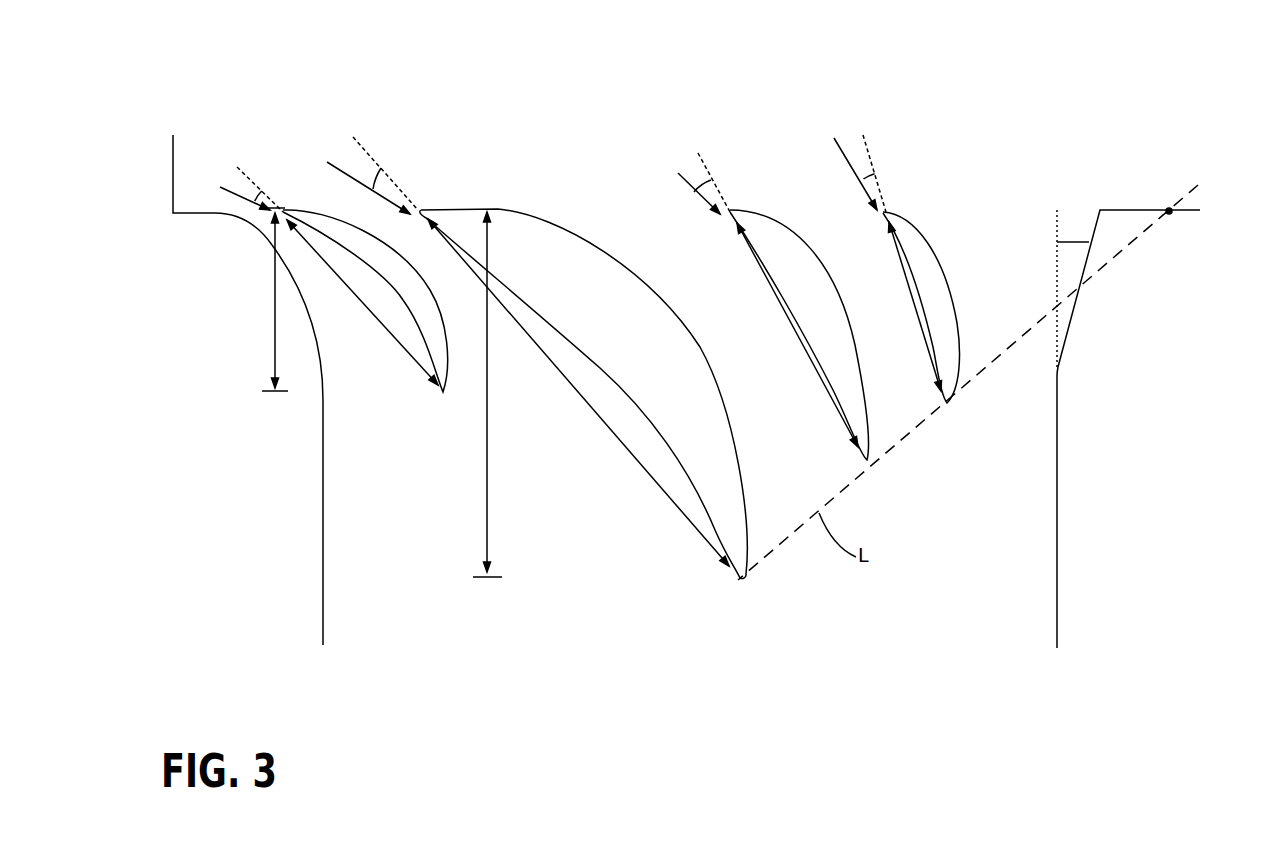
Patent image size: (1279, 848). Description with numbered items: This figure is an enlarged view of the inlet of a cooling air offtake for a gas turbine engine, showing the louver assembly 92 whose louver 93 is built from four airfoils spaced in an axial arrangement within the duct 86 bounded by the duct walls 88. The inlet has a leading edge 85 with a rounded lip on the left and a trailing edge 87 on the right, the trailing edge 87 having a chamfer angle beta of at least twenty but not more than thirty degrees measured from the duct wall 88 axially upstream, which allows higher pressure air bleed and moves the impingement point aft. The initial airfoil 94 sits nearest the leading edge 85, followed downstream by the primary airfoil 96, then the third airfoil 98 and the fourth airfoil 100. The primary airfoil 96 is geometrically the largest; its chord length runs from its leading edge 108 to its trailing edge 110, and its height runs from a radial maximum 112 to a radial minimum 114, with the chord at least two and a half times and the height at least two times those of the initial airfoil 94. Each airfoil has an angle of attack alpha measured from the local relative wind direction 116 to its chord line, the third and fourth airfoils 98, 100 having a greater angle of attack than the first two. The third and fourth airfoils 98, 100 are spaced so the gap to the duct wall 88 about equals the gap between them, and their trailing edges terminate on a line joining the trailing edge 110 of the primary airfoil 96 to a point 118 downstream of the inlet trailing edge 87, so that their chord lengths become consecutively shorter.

The leading edge 85 is at (207, 213).
The duct wall 88 is at (323, 536).
The initial airfoil 94 is at (349, 300).
The primary airfoil 96 is at (583, 394).
The third airfoil 98 is at (799, 335).
The fourth airfoil 100 is at (938, 274).
The local relative wind direction 116 is at (345, 173).
The leading edge 108 is at (417, 209).
The radial maximum 112 is at (493, 208).
The radial minimum 114 is at (489, 578).
The trailing edge 110 is at (753, 578).
The louver 93 is at (459, 177).
The duct 86 is at (661, 181).
The louver assembly 92 is at (832, 84).
The trailing edge 87 is at (1118, 208).
The point 118 is at (1169, 210).